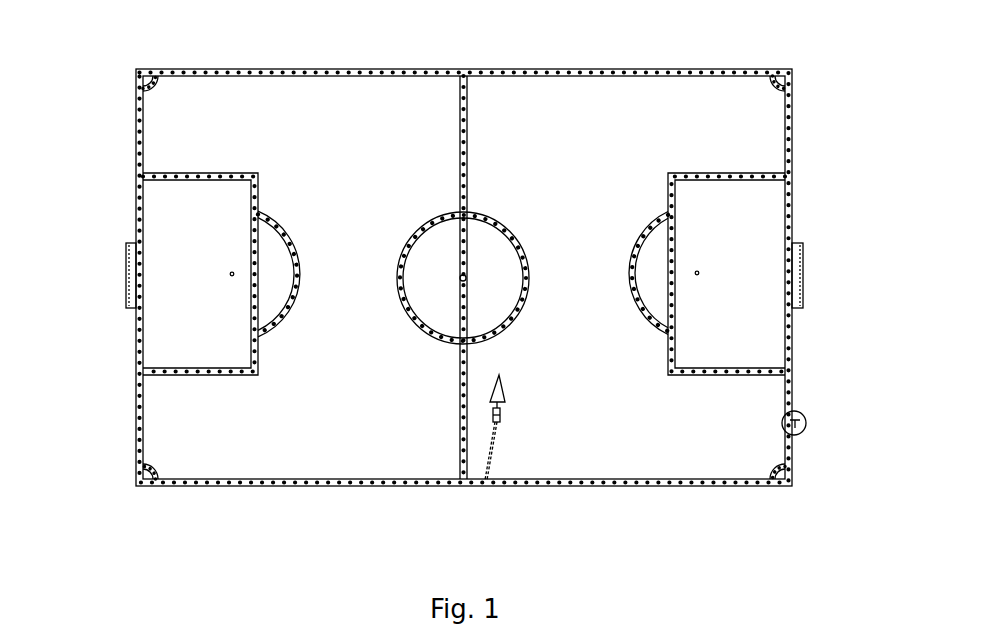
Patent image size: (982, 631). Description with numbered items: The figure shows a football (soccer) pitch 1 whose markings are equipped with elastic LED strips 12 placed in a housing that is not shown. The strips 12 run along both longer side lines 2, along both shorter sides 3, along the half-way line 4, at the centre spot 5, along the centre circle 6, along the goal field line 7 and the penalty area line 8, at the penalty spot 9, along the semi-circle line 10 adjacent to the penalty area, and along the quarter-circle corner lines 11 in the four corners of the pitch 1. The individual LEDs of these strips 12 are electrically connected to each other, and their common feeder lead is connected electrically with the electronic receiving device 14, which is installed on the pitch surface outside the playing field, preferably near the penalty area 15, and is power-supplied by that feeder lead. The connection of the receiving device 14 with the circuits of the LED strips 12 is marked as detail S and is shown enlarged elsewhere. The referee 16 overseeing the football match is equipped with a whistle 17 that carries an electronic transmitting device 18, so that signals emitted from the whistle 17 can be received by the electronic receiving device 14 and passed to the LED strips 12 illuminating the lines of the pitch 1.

The football pitch 1 is at (798, 267).
The longer side lines 2 is at (553, 72).
The shorter sides 3 is at (137, 152).
The half-way line 4 is at (461, 74).
The centre spot 5 is at (461, 281).
The centre circle 6 is at (463, 281).
The goal field line 7 is at (138, 292).
The penalty area line 8 is at (698, 202).
The penalty spot 9 is at (232, 276).
The semi-circle line 10 is at (275, 222).
The quarter-circle corner lines 11 is at (780, 74).
The elastic LED strips 12 is at (255, 218).
The electronic receiving device 14 is at (796, 426).
The penalty area 15 is at (130, 278).
The referee 16 is at (498, 392).
The whistle 17 is at (497, 423).
The electronic transmitting device 18 is at (483, 534).
The detail S is at (842, 396).